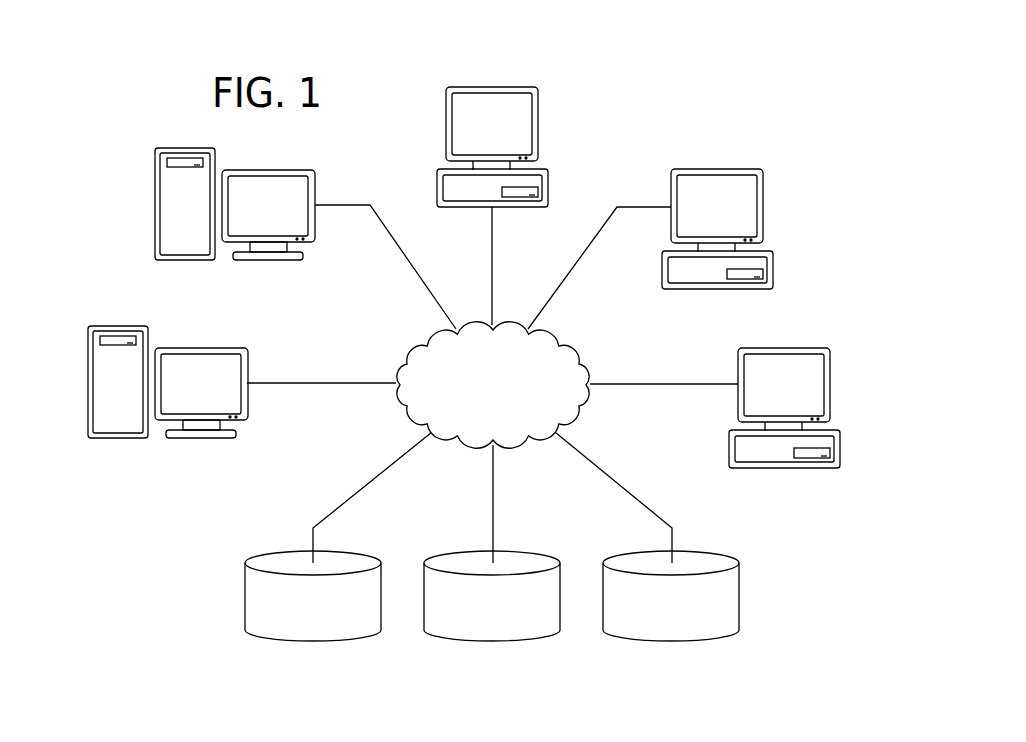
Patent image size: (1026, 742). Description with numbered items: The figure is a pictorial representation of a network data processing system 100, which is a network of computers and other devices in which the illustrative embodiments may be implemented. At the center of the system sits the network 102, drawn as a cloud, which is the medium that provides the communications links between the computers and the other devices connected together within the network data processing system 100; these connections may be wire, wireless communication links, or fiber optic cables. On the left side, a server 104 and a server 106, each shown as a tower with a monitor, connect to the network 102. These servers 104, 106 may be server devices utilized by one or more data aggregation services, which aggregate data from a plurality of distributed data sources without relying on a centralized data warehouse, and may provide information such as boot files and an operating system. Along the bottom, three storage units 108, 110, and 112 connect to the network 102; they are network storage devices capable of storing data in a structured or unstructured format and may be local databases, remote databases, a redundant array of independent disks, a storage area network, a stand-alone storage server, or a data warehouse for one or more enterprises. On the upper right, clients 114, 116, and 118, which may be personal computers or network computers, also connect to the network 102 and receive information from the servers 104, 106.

The network data processing system 100 is at (672, 62).
The network 102 is at (473, 418).
The server 104 is at (155, 202).
The server 106 is at (88, 385).
The storage unit 108 is at (285, 641).
The storage unit 110 is at (465, 641).
The storage unit 112 is at (700, 641).
The client 114 is at (538, 123).
The client 116 is at (773, 268).
The client 118 is at (839, 447).